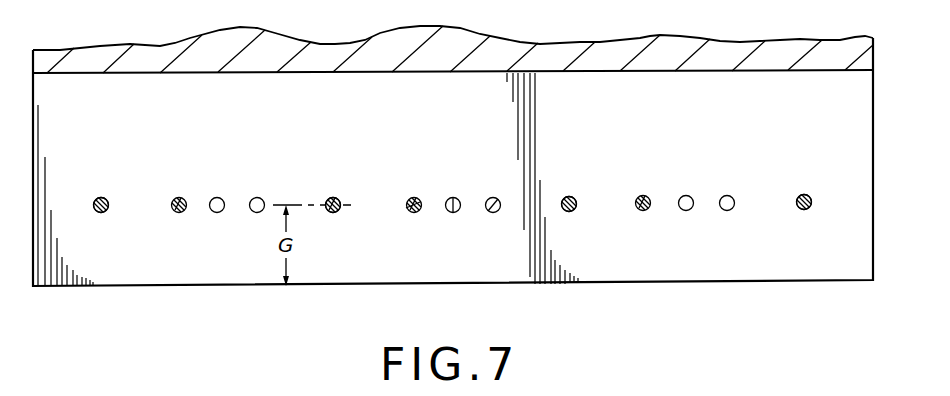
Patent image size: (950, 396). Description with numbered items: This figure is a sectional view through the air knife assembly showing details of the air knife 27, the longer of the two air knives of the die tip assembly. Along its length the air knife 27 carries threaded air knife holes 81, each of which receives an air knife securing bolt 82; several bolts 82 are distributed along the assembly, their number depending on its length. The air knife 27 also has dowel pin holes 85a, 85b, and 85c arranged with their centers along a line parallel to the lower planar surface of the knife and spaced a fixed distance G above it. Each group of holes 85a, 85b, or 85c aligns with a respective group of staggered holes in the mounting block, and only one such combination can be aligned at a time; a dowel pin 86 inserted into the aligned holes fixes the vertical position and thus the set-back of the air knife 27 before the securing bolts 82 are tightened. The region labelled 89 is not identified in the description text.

The air knife 27 is at (257, 69).
The threaded air knife hole 81 is at (101, 212).
The air knife securing bolt 82 is at (96, 199).
The dowel pin hole 85a is at (411, 198).
The dowel pin hole 85b is at (453, 197).
The dowel pin hole 85c is at (498, 198).
The dowel pin 86 is at (179, 198).
The plate body 89 is at (160, 256).